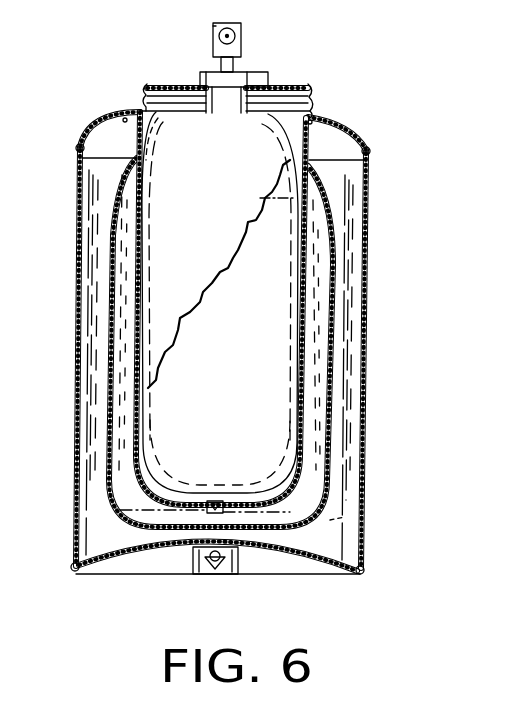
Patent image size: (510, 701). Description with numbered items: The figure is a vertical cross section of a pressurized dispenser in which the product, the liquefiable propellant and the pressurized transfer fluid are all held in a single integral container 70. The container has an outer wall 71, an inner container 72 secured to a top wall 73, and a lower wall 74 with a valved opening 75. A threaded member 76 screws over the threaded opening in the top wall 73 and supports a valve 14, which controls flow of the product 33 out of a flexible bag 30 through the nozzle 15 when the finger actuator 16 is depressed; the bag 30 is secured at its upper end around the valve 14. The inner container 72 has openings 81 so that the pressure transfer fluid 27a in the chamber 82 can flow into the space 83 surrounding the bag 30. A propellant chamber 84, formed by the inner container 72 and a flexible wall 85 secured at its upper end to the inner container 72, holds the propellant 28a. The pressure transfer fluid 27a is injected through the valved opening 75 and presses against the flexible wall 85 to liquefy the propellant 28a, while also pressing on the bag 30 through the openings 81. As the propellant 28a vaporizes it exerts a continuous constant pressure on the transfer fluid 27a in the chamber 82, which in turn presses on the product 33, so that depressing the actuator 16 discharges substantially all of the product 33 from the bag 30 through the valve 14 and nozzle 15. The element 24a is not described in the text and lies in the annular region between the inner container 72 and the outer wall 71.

The valve 14 is at (233, 77).
The nozzle 15 is at (240, 31).
The finger actuator 16 is at (213, 30).
The annular chamber 24a is at (336, 174).
The pressure transfer fluid 27a is at (109, 171).
The propellant 28a is at (128, 483).
The flexible bag 30 is at (242, 173).
The product 33 is at (230, 365).
The integral container 70 is at (372, 248).
The outer wall 71 is at (367, 348).
The inner container 72 is at (330, 493).
The top wall 73 is at (346, 137).
The lower wall 74 is at (295, 550).
The valved opening 75 is at (198, 574).
The threaded member 76 is at (293, 83).
The openings 81 is at (125, 120).
The chamber 82 is at (337, 528).
The space 83 is at (163, 127).
The propellant chamber 84 is at (330, 430).
The flexible wall 85 is at (113, 326).